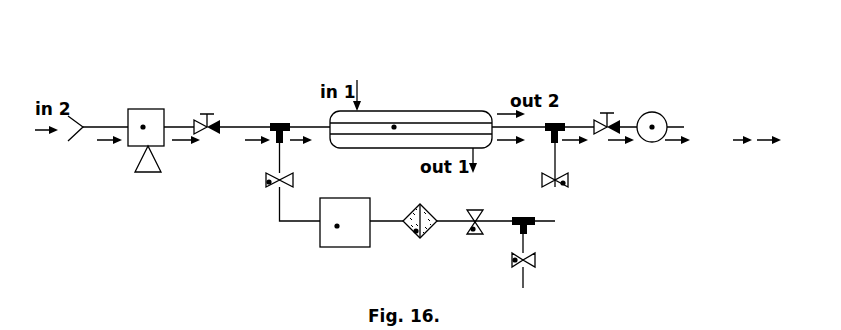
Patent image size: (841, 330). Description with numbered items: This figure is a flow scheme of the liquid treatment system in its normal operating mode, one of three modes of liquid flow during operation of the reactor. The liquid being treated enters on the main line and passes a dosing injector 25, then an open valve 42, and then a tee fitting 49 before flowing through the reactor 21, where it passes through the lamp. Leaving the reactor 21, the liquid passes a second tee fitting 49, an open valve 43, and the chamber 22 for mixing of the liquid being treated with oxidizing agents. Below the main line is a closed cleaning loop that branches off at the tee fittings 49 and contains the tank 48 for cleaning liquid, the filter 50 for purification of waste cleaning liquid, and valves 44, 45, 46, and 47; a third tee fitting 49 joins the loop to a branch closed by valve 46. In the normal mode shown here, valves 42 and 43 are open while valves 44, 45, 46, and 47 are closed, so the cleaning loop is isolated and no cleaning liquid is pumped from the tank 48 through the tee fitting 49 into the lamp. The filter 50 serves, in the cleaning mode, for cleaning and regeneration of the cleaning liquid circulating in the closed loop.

The reactor 21 is at (394, 127).
The chamber for mixing of liquid being treated with oxidizing agents 22 is at (652, 127).
The dosing injector 25 is at (143, 127).
The valve 42 is at (215, 124).
The valve 43 is at (614, 124).
The valve 44 is at (269, 182).
The valve 45 is at (473, 229).
The valve 46 is at (515, 260).
The valve 47 is at (563, 183).
The tank for cleaning liquid 48 is at (337, 226).
The tee fitting 49 is at (283, 125).
The filter for purification of waste cleaning liquid 50 is at (416, 231).